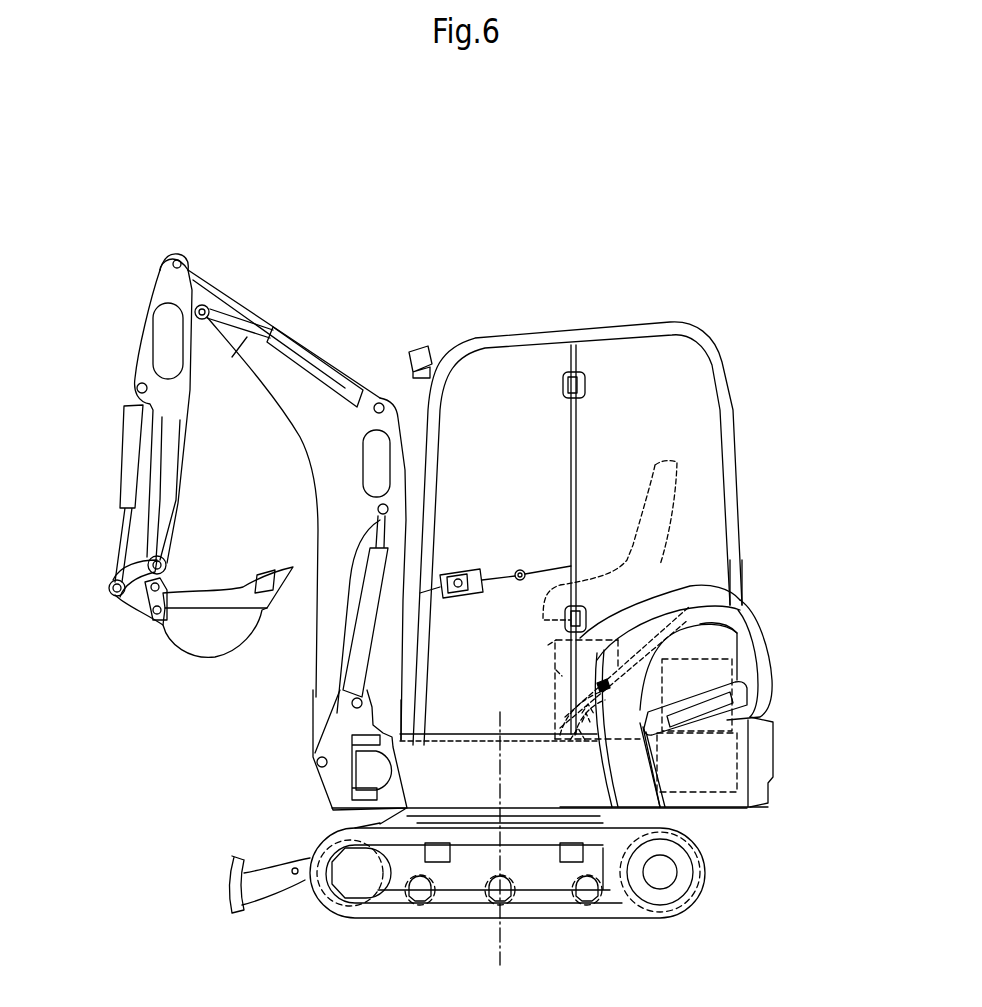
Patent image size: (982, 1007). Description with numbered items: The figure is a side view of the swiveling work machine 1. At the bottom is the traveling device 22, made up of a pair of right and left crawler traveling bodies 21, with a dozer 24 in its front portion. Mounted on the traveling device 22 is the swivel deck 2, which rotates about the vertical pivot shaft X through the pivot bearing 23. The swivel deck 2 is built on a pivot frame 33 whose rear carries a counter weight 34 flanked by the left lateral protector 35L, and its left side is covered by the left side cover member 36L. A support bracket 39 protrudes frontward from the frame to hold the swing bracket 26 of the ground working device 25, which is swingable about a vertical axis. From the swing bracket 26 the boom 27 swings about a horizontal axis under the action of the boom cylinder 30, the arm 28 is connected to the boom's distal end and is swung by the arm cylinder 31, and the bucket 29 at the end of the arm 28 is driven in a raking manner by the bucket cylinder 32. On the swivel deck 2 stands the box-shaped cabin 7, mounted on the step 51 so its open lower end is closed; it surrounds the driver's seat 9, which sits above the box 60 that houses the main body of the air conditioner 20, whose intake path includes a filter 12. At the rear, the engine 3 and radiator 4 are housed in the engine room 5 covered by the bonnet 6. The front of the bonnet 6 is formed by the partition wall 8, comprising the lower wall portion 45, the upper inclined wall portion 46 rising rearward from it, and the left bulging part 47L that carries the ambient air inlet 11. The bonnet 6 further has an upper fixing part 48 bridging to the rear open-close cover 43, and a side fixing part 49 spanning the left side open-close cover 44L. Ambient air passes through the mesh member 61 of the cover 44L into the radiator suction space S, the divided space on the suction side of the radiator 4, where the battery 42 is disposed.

The swiveling work machine 1 is at (726, 189).
The swivel deck 2 is at (771, 492).
The engine 3 is at (775, 660).
The radiator 4 is at (697, 695).
The engine room 5 is at (732, 600).
The bonnet 6 is at (726, 616).
The cabin 7 is at (574, 318).
The partition wall 8 is at (589, 738).
The driver's seat 9 is at (653, 483).
The ambient air inlet 11 is at (608, 731).
The filter 12 is at (625, 667).
The air conditioner 20 is at (552, 667).
The crawler traveling bodies 21 is at (612, 905).
The traveling device 22 is at (441, 930).
The pivot bearing 23 is at (390, 812).
The dozer 24 is at (268, 902).
The ground working device 25 is at (259, 253).
The swing bracket 26 is at (330, 780).
The boom 27 is at (328, 493).
The arm 28 is at (183, 458).
The bucket 29 is at (197, 633).
The boom cylinder 30 is at (367, 613).
The arm cylinder 31 is at (318, 359).
The bucket cylinder 32 is at (130, 466).
The pivot frame 33 is at (733, 823).
The counter weight 34 is at (783, 757).
The left lateral protector 35L is at (713, 797).
The left side cover member 36L is at (540, 797).
The support bracket 39 is at (392, 728).
The battery 42 is at (767, 778).
The rear open-close cover 43 is at (772, 647).
The left side open-close cover 44L is at (772, 690).
The lower wall portion 45 is at (577, 735).
The upper inclined wall portion 46 is at (607, 686).
The left bulging part 47L is at (555, 686).
The upper fixing part 48 is at (717, 600).
The side fixing part 49 is at (648, 622).
The step 51 is at (545, 740).
The box 60 is at (548, 645).
The mesh member 61 is at (713, 650).
The radiator suction space S is at (605, 712).
The vertical pivot shaft X is at (503, 852).